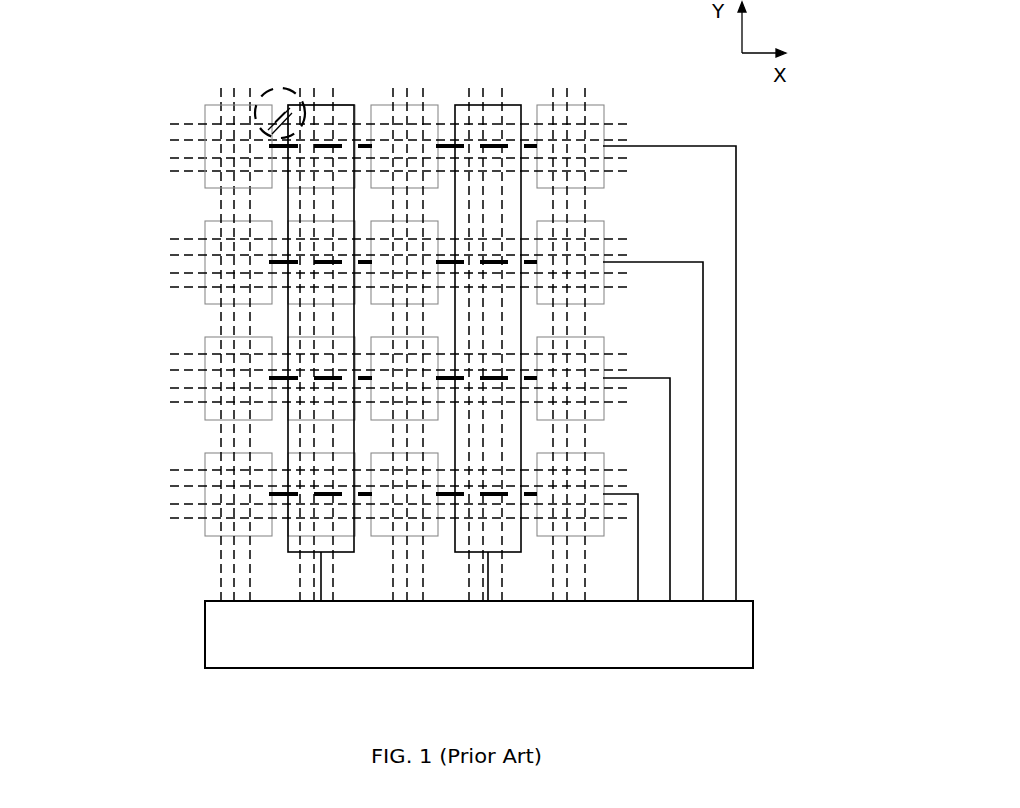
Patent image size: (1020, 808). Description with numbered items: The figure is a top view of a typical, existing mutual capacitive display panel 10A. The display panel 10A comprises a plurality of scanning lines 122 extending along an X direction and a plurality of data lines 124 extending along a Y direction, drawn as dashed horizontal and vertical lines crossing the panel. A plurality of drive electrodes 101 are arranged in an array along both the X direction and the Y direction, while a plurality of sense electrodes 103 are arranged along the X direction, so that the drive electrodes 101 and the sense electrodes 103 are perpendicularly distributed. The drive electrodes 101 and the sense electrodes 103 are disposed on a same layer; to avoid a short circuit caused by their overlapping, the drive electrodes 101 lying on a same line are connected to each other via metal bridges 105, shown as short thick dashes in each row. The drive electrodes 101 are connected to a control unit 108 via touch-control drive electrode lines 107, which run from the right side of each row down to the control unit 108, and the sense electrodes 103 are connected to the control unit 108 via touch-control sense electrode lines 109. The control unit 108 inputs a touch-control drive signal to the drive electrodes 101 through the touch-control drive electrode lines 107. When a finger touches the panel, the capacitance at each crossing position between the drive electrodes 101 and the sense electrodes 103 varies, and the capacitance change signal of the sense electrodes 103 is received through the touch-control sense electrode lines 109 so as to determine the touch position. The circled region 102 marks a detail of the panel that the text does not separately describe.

The display panel 10A is at (333, 312).
The drive electrode 101 is at (205, 145).
The thin film transistor 102 is at (272, 90).
The sense electrode 103 is at (337, 105).
The metal bridge 105 is at (500, 140).
The touch-control drive electrode line 107 is at (737, 485).
The control unit 108 is at (755, 632).
The touch-control sense electrode line 109 is at (321, 585).
The scanning line 122 is at (618, 122).
The data line 124 is at (585, 210).